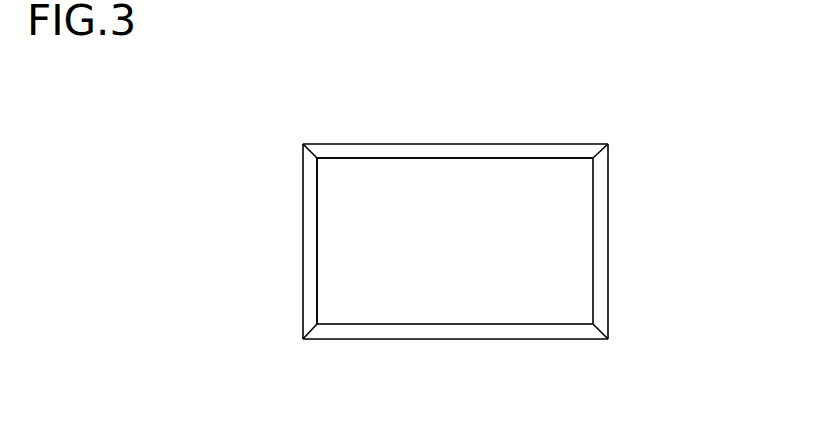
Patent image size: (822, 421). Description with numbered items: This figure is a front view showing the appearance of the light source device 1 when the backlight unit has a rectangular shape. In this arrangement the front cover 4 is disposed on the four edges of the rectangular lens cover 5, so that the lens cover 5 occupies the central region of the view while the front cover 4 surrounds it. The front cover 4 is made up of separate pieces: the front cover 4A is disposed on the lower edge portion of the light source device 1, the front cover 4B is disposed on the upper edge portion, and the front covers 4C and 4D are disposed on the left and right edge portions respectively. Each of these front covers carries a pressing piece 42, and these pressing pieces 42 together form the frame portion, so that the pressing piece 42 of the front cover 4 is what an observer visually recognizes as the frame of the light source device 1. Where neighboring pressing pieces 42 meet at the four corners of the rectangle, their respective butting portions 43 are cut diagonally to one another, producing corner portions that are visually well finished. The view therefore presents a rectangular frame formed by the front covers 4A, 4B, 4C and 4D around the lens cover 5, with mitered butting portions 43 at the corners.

The light source device 1 is at (632, 134).
The front cover 4 is at (456, 241).
The front cover 4A is at (458, 340).
The front cover 4B is at (460, 144).
The front cover 4C is at (303, 233).
The front cover 4D is at (608, 233).
The lens cover 5 is at (459, 247).
The pressing piece 42 is at (366, 150).
The butting portion 43 is at (310, 143).